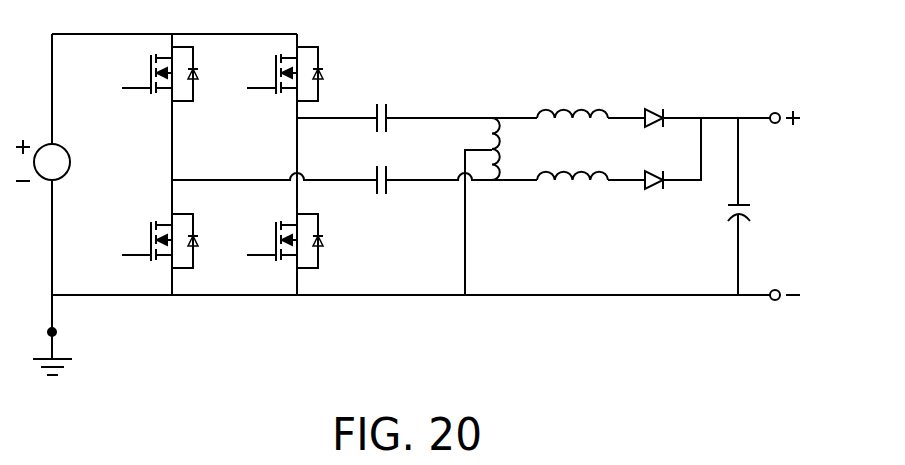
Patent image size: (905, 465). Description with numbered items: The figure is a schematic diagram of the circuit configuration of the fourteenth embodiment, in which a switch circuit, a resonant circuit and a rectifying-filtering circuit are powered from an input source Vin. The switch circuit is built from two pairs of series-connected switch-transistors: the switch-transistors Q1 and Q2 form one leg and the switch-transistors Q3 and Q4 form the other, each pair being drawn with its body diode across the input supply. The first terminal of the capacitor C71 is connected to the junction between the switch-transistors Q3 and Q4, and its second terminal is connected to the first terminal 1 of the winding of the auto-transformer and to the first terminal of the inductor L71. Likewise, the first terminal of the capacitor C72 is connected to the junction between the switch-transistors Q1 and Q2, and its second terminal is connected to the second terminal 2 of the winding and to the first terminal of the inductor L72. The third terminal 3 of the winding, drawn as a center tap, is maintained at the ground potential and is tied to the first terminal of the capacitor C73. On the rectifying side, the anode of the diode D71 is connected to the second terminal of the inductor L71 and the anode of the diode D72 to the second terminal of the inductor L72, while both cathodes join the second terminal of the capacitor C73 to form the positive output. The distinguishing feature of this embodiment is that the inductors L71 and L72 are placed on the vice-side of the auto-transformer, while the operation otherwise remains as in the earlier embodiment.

The input voltage source Vin is at (62, 160).
The switch-transistor Q1 is at (177, 74).
The switch-transistor Q2 is at (177, 241).
The switch-transistor Q3 is at (302, 74).
The switch-transistor Q4 is at (302, 241).
The capacitor C71 is at (395, 103).
The capacitor C72 is at (395, 197).
The capacitor C73 is at (763, 206).
The inductor L71 is at (572, 95).
The inductor L72 is at (572, 196).
The diode D71 is at (657, 100).
The diode D72 is at (657, 200).
The first terminal of the winding of the auto-transformer 1 is at (492, 117).
The second terminal of the winding of the auto-transformer 2 is at (492, 182).
The third terminal of the winding of the auto-transformer 3 is at (487, 149).